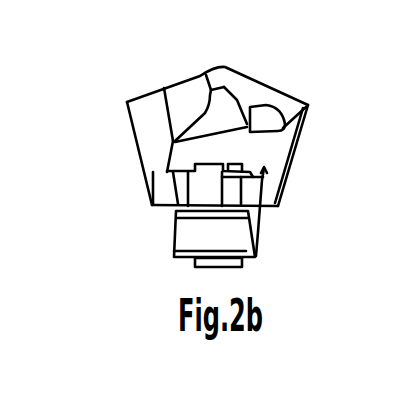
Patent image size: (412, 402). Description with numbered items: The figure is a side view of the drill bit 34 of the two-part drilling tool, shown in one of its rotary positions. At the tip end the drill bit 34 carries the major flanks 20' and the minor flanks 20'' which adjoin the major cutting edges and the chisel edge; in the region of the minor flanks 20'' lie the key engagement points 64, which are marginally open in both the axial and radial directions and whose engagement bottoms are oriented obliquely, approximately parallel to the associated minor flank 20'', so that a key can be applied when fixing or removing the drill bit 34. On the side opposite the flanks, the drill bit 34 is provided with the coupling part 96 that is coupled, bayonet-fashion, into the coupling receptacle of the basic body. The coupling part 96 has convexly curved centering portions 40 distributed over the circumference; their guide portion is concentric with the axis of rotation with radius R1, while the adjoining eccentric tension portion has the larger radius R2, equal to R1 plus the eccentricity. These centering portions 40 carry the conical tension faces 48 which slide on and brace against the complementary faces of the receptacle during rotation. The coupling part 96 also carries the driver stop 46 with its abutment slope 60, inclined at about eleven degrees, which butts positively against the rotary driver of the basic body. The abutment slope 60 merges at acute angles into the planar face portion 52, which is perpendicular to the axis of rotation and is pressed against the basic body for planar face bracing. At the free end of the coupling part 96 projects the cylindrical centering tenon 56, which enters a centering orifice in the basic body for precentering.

The drill bit 34 is at (183, 95).
The major flank 20' is at (199, 72).
The minor flank 20'' is at (268, 103).
The key engagement point 64 is at (266, 117).
The planar face portion 52 is at (165, 178).
The abutment slope 60 is at (163, 172).
The driver stop 46 is at (235, 167).
The radius R1 is at (243, 153).
The radius R2 is at (216, 197).
The coupling part 96 is at (258, 232).
The centering portion 40 is at (176, 213).
The tension face 48 is at (211, 234).
The centering tenon 56 is at (242, 266).